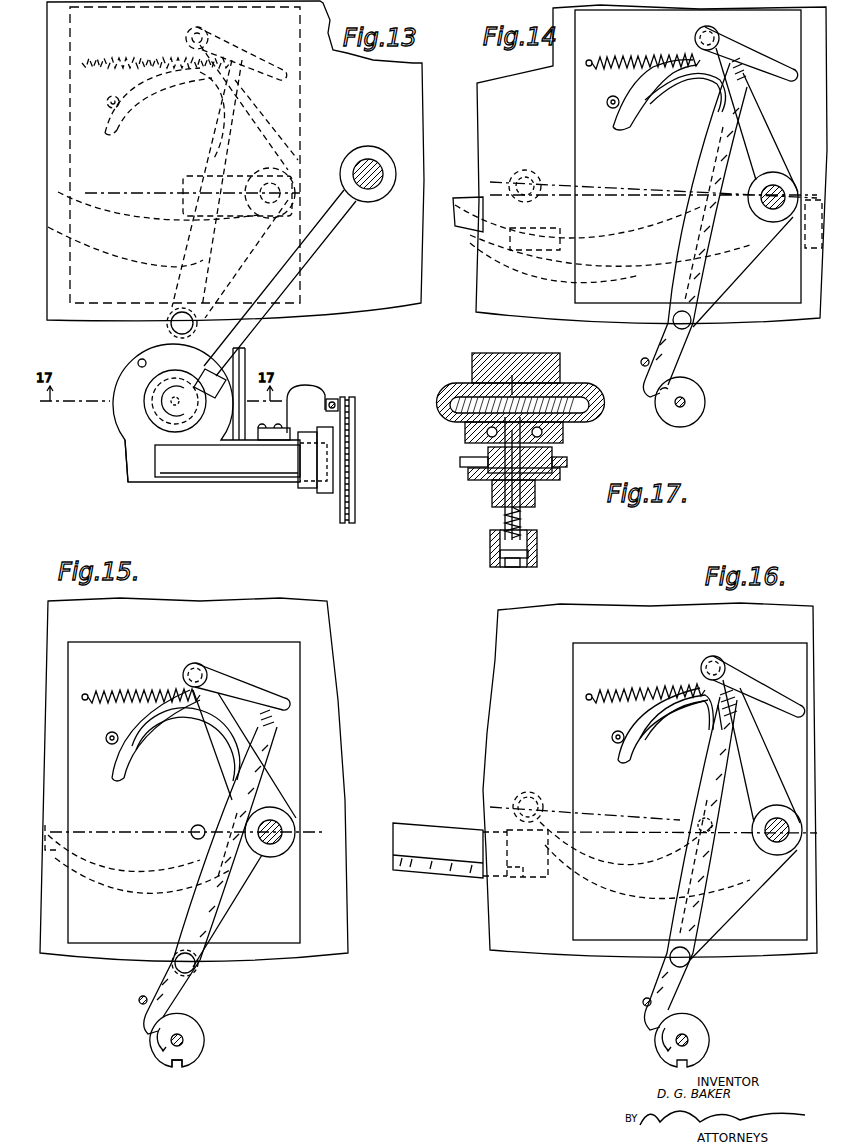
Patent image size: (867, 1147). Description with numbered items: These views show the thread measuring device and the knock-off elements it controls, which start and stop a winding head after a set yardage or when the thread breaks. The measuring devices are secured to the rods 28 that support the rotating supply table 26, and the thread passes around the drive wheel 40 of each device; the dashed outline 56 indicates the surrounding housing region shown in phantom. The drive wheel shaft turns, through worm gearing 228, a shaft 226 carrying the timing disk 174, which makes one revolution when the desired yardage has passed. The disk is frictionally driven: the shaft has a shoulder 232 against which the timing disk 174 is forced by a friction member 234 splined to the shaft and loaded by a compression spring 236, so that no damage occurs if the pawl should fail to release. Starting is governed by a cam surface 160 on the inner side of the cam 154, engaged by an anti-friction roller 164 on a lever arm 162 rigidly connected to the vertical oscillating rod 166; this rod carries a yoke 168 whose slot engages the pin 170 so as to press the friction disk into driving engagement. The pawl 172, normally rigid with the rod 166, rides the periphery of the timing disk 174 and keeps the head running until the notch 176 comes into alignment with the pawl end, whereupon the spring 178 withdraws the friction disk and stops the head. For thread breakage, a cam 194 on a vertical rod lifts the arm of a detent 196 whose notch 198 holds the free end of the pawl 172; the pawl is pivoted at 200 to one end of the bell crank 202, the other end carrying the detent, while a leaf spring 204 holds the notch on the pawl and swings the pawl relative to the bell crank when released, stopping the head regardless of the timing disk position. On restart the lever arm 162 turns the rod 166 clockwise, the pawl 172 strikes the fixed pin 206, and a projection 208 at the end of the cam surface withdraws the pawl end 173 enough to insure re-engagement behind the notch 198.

In FIG. 13, the supply table 26 is at (421, 118).
In FIG. 13, the rod 28 is at (371, 162).
In FIG. 13, the drive wheel 40 is at (357, 462).
In FIG. 13, the mechanism outline 56 is at (300, 86).
In FIG. 14, the cam 154 is at (600, 262).
In FIG. 16, the cam 154 is at (417, 882).
In FIG. 14, the cam surface 160 is at (653, 207).
In FIG. 16, the cam surface 160 is at (433, 811).
In FIG. 13, the lever arm 162 is at (128, 268).
In FIG. 14, the lever arm 162 is at (646, 268).
In FIG. 14, the anti-friction roller 164 is at (534, 168).
In FIG. 13, the oscillating rod 166 is at (282, 168).
In FIG. 14, the oscillating rod 166 is at (781, 172).
In FIG. 15, the oscillating rod 166 is at (283, 830).
In FIG. 16, the oscillating rod 166 is at (776, 805).
In FIG. 14, the yoke 168 is at (722, 188).
In FIG. 15, the pin 170 is at (198, 825).
In FIG. 13, the pawl 172 is at (172, 337).
In FIG. 14, the pawl 172 is at (657, 346).
In FIG. 15, the pawl 172 is at (212, 880).
In FIG. 16, the pawl 172 is at (690, 860).
In FIG. 16, the end of the pawl 173 is at (723, 729).
In FIG. 14, the timing disk 174 is at (707, 408).
In FIG. 17, the timing disk 174 is at (473, 447).
In FIG. 15, the timing disk 174 is at (193, 1041).
In FIG. 14, the notch 176 is at (694, 390).
In FIG. 15, the notch 176 is at (177, 1069).
In FIG. 14, the spring 178 is at (621, 57).
In FIG. 15, the spring 178 is at (112, 694).
In FIG. 14, the cam 194 is at (607, 103).
In FIG. 15, the cam 194 is at (108, 745).
In FIG. 14, the detent 196 is at (683, 48).
In FIG. 15, the detent 196 is at (176, 688).
In FIG. 14, the notch 198 is at (752, 62).
In FIG. 15, the notch 198 is at (245, 700).
In FIG. 16, the notch 198 is at (755, 697).
In FIG. 14, the pivot 200 is at (688, 330).
In FIG. 15, the pivot 200 is at (195, 970).
In FIG. 16, the pivot 200 is at (690, 963).
In FIG. 14, the bell crank 202 is at (727, 277).
In FIG. 15, the bell crank 202 is at (235, 905).
In FIG. 16, the bell crank 202 is at (747, 888).
In FIG. 14, the leaf spring 204 is at (708, 84).
In FIG. 16, the leaf spring 204 is at (683, 723).
In FIG. 14, the fixed pin 206 is at (640, 364).
In FIG. 16, the fixed pin 206 is at (642, 1002).
In FIG. 16, the projection 208 is at (518, 882).
In FIG. 13, the shaft 226 is at (150, 410).
In FIG. 17, the shaft 226 is at (513, 497).
In FIG. 17, the worm gearing 228 is at (565, 420).
In FIG. 17, the shoulder 232 is at (553, 457).
In FIG. 17, the friction member 234 is at (470, 483).
In FIG. 17, the compression spring 236 is at (523, 517).